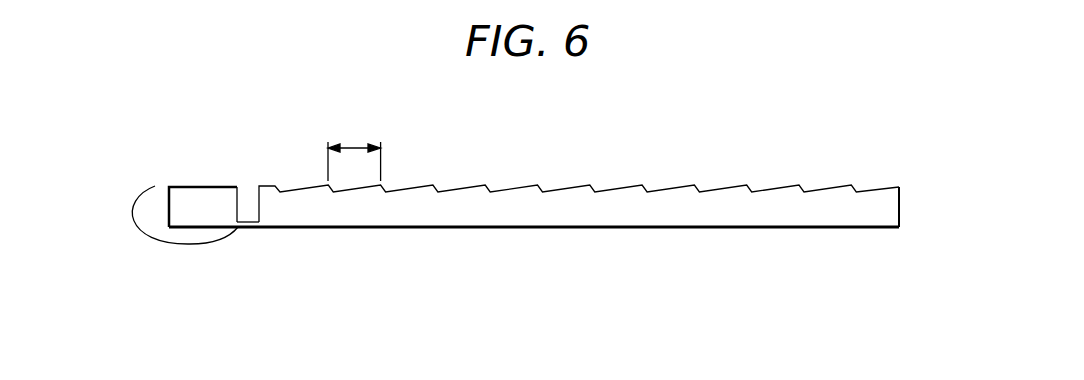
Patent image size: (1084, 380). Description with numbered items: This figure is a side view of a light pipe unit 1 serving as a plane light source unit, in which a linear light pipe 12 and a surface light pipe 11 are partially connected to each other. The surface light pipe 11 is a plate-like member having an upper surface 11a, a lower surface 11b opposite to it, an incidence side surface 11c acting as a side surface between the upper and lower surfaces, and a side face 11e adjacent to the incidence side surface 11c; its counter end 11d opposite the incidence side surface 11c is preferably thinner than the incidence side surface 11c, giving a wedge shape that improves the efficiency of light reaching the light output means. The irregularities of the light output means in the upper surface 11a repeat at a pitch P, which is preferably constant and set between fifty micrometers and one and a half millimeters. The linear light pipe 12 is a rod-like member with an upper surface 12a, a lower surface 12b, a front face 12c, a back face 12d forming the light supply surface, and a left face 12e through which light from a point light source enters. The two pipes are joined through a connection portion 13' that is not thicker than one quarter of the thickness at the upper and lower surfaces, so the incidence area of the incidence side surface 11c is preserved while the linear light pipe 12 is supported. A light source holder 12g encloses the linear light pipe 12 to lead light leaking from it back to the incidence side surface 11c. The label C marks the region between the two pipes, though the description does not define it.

The light pipe unit 1 is at (529, 280).
The surface light pipe 11 is at (712, 153).
The upper surface 11a is at (574, 188).
The lower surface 11b is at (575, 228).
The incidence side surface 11c is at (257, 188).
The counter end 11d is at (900, 205).
The side face 11e is at (820, 206).
The linear light pipe 12 is at (150, 208).
The upper surface 12a is at (188, 185).
The lower surface 12b is at (215, 229).
The front face 12c is at (169, 187).
The back face 12d is at (237, 187).
The left face 12e is at (187, 216).
The light source holder 12g is at (142, 223).
The connection portion 13' is at (254, 260).
The clearance gap C is at (246, 203).
The repetition pitch P is at (354, 152).